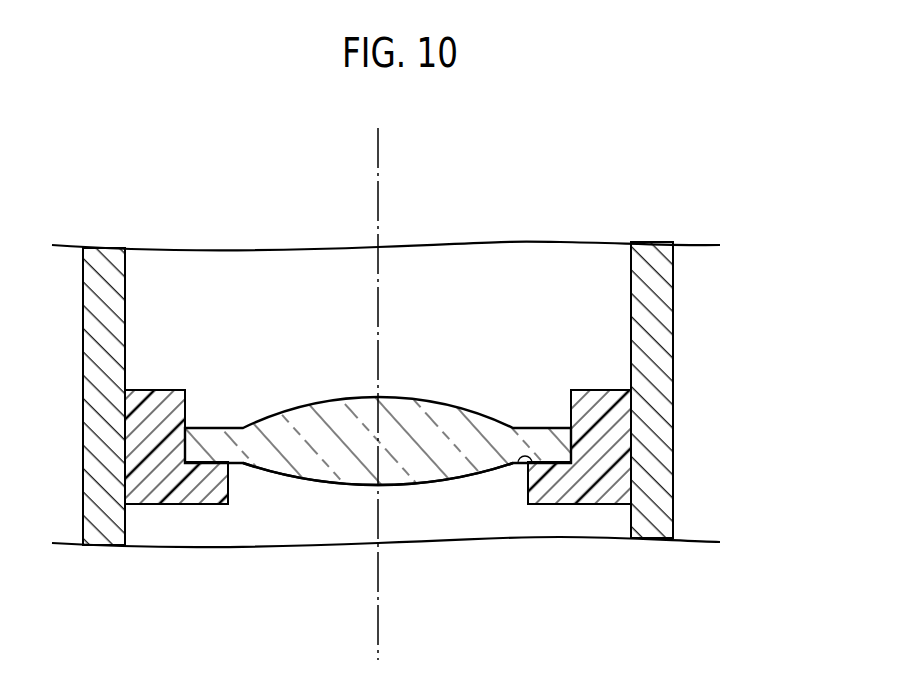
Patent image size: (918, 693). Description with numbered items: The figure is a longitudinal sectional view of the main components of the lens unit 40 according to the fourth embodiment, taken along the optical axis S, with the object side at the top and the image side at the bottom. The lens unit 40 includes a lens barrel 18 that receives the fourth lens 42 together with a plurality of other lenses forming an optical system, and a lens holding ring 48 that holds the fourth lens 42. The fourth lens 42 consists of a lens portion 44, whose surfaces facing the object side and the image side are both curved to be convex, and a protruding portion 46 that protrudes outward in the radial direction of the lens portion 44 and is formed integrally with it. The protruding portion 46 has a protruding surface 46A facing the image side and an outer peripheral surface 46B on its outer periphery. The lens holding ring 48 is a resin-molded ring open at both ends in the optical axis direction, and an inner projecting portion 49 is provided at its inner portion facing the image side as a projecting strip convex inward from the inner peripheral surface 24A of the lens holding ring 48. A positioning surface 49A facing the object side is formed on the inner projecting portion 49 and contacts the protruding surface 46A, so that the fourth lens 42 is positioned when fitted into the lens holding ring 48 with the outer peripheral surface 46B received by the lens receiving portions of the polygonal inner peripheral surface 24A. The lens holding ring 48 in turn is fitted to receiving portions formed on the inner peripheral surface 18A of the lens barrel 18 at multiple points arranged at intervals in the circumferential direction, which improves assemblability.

The lens unit 40 is at (712, 179).
The optical axis S is at (382, 153).
The lens barrel 18 is at (684, 279).
The inner peripheral surface 18A is at (634, 308).
The fourth lens 42 is at (427, 389).
The lens portion 44 is at (396, 480).
The protruding portion 46 is at (640, 376).
The protruding surface 46A is at (600, 495).
The outer peripheral surface 46B is at (575, 439).
The inner peripheral surface 24A is at (578, 450).
The lens holding ring 48 is at (594, 515).
The inner projecting portion 49 is at (543, 506).
The positioning surface 49A is at (513, 466).